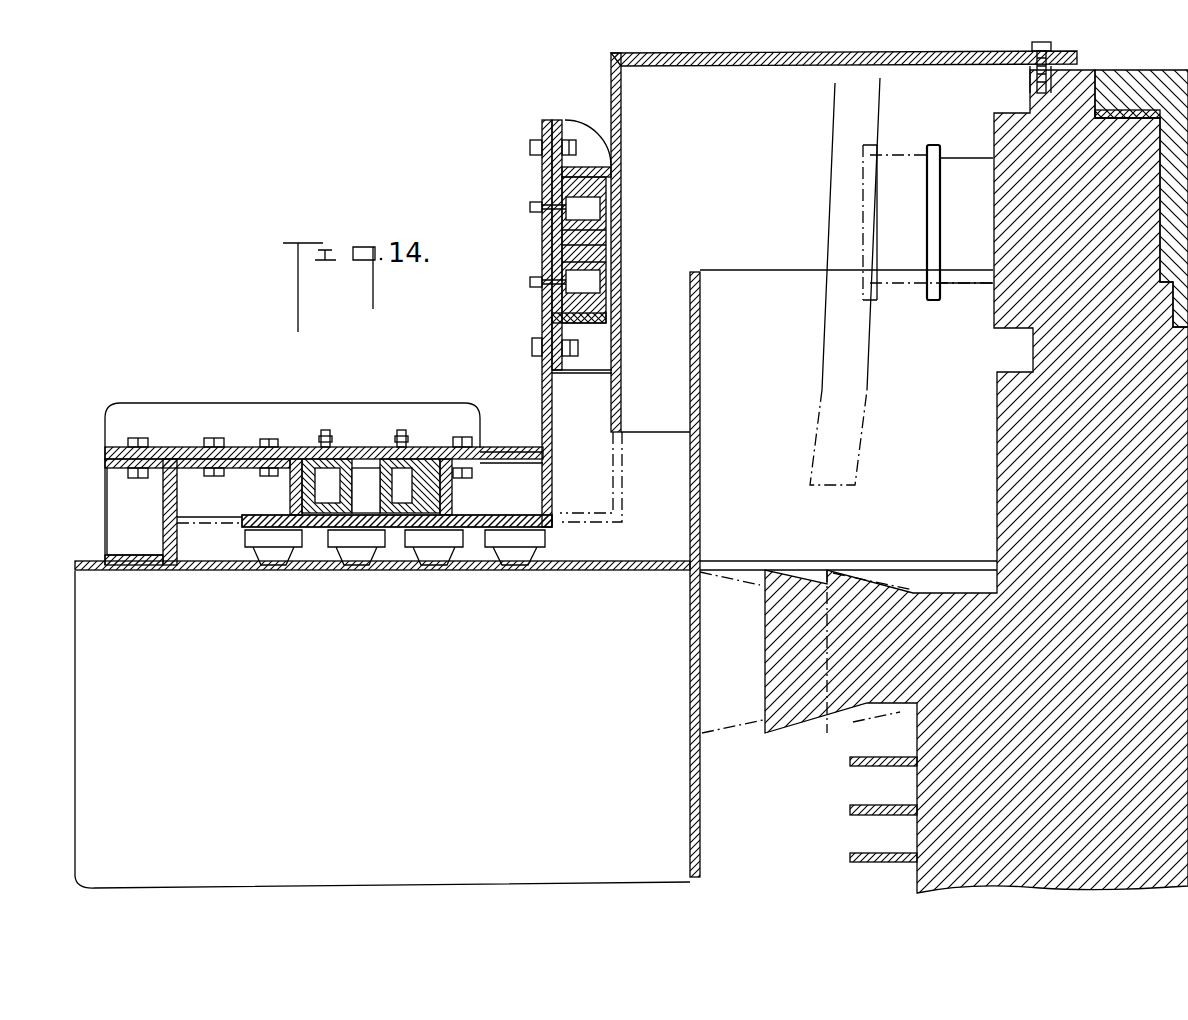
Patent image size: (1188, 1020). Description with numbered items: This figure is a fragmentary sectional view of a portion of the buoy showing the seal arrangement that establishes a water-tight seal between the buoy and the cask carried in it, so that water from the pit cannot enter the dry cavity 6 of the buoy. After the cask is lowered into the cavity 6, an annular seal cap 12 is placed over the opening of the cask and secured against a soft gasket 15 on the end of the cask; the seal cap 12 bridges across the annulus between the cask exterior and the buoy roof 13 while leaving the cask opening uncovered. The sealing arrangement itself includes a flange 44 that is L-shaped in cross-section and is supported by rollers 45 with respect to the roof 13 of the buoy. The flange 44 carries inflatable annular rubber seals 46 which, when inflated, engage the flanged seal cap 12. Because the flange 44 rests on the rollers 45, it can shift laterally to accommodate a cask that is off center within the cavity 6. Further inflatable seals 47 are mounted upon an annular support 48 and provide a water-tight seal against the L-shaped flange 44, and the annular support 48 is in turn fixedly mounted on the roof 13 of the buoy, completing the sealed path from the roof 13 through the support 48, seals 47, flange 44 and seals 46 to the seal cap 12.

The cavity 6 is at (835, 845).
The seal cap 12 is at (611, 85).
The roof 13 is at (583, 572).
The soft gasket 15 is at (1078, 64).
The flange 44 is at (542, 392).
The rollers 45 is at (512, 562).
The inflatable annular rubber seals 46 is at (606, 210).
The inflatable seals 47 is at (400, 522).
The annular support 48 is at (187, 447).